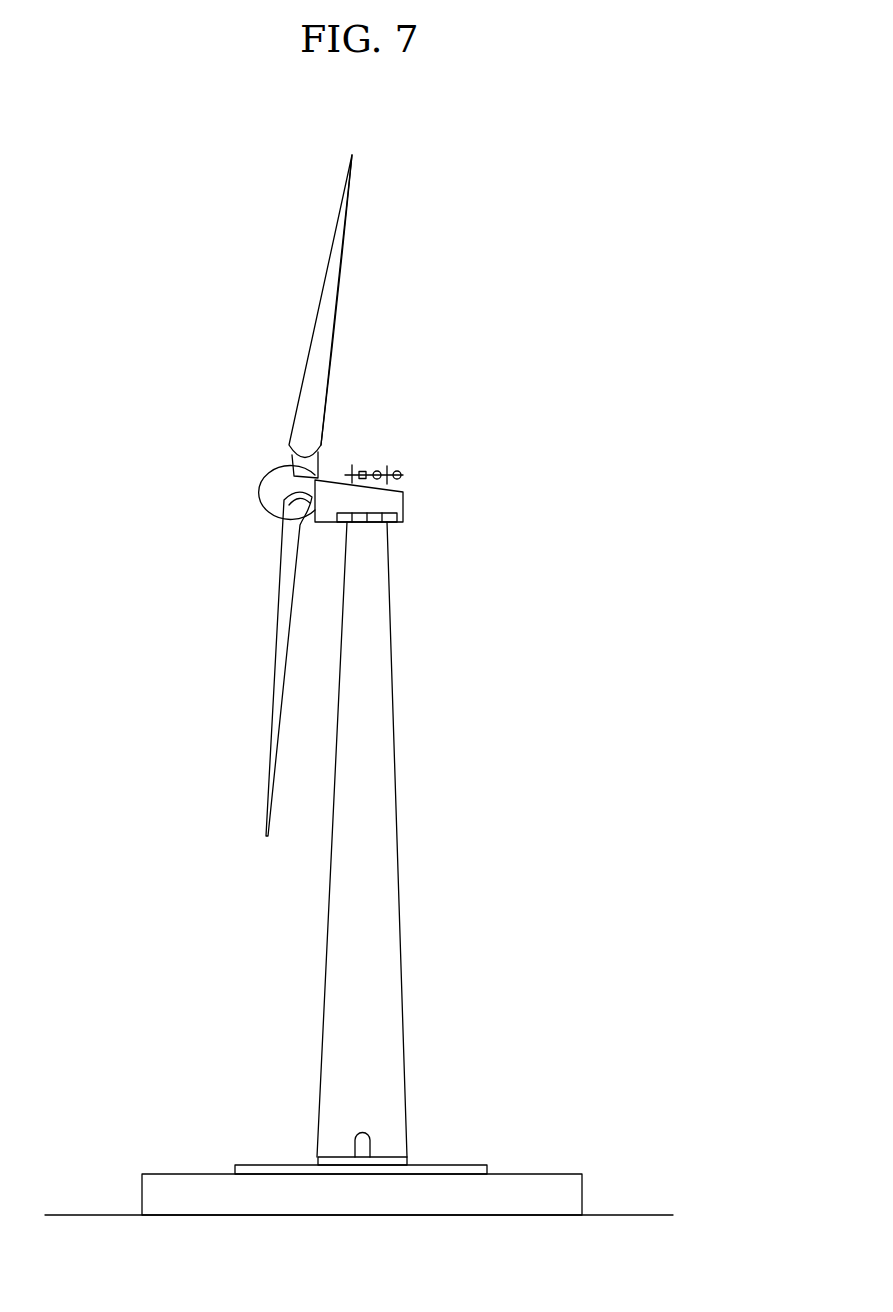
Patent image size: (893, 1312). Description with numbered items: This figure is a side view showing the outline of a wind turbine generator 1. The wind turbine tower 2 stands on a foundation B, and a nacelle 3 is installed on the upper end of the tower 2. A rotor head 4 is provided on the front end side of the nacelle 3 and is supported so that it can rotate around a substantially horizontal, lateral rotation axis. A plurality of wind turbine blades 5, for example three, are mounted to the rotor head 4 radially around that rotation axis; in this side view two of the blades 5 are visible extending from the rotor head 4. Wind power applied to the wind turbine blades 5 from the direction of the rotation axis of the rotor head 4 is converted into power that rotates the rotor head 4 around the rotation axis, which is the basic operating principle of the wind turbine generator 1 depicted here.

The wind turbine generator 1 is at (498, 410).
The wind turbine tower 2 is at (393, 703).
The nacelle 3 is at (411, 487).
The rotor head 4 is at (252, 486).
The wind turbine blades 5 is at (343, 255).
The foundation B is at (541, 1174).